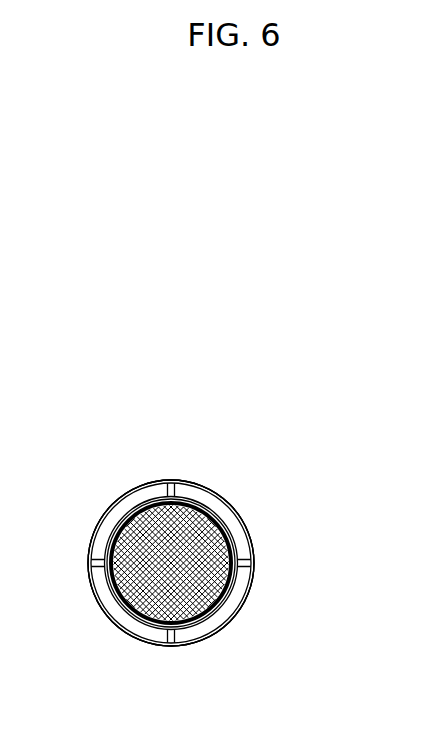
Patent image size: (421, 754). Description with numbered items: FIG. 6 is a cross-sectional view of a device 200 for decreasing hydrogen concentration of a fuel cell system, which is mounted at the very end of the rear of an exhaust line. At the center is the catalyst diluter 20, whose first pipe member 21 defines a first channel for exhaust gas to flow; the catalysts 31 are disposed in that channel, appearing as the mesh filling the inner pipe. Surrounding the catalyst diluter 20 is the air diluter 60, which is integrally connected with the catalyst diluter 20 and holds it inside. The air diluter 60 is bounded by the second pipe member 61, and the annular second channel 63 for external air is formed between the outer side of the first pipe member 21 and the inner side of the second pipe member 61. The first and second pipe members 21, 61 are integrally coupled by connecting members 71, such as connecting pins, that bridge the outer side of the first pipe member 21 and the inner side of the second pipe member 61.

The device for decreasing hydrogen concentration 200 is at (187, 398).
The air diluter 60 is at (244, 507).
The second pipe member 61 is at (254, 553).
The second channel 63 is at (101, 540).
The connecting member 71 is at (161, 483).
The catalyst diluter 20 is at (57, 690).
The first pipe member 21 is at (141, 623).
The catalysts 31 is at (121, 601).